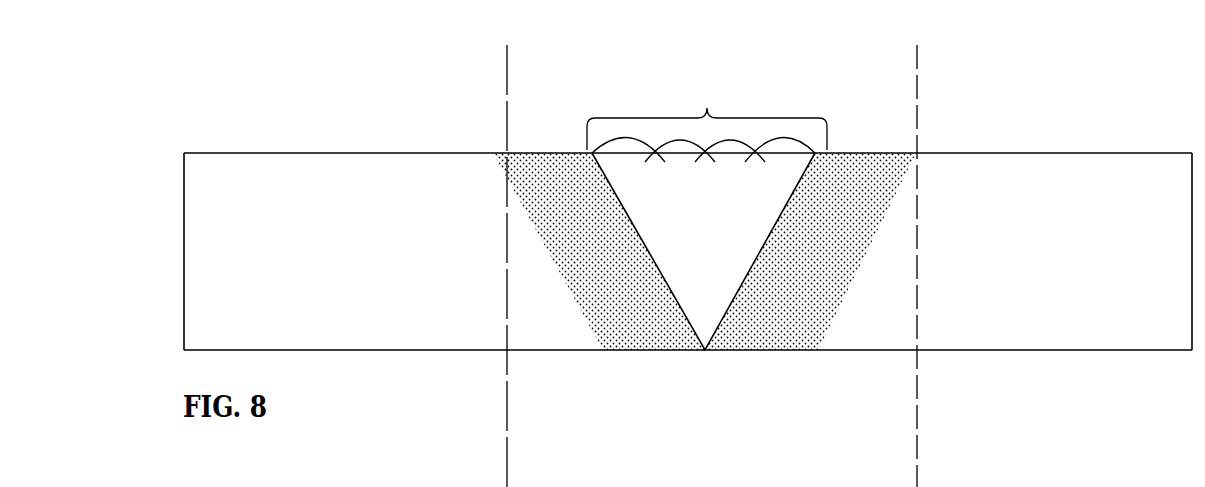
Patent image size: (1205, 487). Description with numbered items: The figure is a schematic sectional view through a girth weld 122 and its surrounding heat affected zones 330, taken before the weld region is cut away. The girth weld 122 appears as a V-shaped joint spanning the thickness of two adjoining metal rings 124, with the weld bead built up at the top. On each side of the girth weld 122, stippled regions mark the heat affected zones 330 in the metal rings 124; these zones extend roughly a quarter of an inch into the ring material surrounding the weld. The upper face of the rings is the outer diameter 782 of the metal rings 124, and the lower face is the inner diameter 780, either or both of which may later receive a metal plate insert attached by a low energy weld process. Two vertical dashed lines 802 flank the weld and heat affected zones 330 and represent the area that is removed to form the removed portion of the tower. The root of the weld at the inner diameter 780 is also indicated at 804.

The girth weld 122 is at (707, 108).
The metal rings 124 is at (313, 272).
The heat affected zones 330 is at (553, 183).
The inner diameter of metal rings 780 is at (1056, 350).
The outer diameter of metal rings 782 is at (1020, 153).
The dashed lines 802 is at (507, 405).
The weld root 804 is at (712, 290).